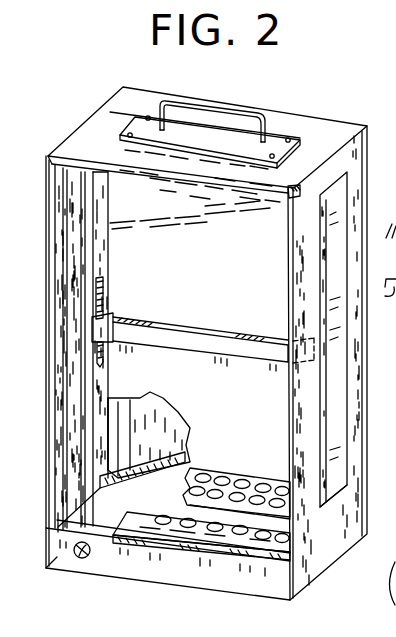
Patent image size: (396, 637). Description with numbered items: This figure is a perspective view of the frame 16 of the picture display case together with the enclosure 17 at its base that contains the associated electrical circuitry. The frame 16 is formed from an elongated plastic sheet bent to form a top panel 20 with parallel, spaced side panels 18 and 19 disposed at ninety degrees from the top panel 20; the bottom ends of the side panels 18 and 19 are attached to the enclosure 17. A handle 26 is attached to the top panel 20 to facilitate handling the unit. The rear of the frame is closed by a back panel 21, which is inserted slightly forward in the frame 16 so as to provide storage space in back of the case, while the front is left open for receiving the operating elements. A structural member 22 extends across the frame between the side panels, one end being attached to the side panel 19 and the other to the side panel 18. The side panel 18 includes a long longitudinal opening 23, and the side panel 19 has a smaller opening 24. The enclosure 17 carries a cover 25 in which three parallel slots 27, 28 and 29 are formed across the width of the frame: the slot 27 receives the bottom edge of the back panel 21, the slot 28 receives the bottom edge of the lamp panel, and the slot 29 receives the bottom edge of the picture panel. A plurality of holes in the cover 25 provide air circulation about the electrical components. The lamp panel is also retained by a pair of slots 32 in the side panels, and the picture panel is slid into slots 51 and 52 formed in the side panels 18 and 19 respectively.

The frame 16 is at (338, 107).
The enclosure 17 is at (110, 560).
The side panel 18 is at (318, 552).
The side panel 19 is at (93, 218).
The top panel 20 is at (100, 120).
The back panel 21 is at (190, 212).
The structural member 22 is at (218, 350).
The long longitudinal opening 23 is at (328, 300).
The smaller opening 24 is at (104, 300).
The cover 25 is at (133, 450).
The handle 26 is at (240, 117).
The slot 27 is at (95, 485).
The slot 28 is at (217, 515).
The slot 29 is at (182, 547).
The slots 32 is at (86, 252).
The slot 51 is at (290, 195).
The slot 52 is at (63, 303).